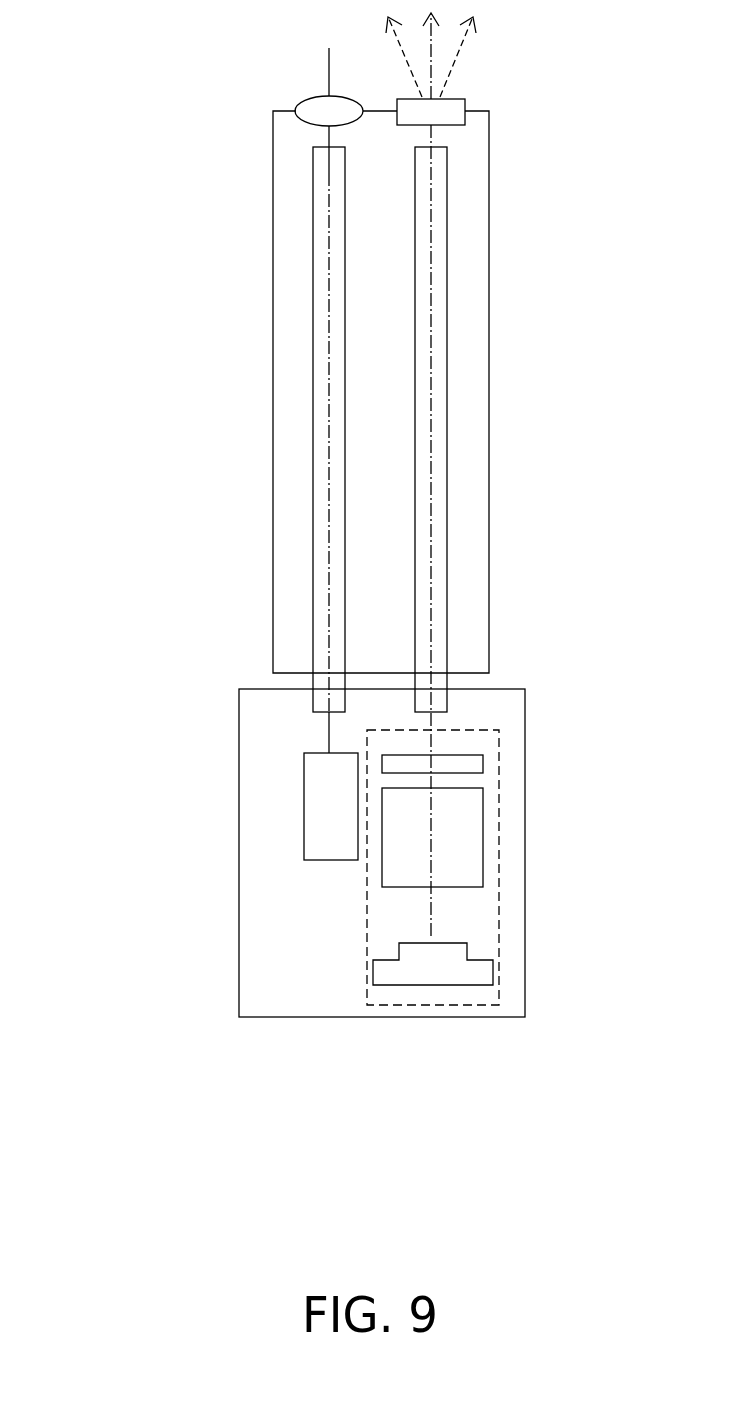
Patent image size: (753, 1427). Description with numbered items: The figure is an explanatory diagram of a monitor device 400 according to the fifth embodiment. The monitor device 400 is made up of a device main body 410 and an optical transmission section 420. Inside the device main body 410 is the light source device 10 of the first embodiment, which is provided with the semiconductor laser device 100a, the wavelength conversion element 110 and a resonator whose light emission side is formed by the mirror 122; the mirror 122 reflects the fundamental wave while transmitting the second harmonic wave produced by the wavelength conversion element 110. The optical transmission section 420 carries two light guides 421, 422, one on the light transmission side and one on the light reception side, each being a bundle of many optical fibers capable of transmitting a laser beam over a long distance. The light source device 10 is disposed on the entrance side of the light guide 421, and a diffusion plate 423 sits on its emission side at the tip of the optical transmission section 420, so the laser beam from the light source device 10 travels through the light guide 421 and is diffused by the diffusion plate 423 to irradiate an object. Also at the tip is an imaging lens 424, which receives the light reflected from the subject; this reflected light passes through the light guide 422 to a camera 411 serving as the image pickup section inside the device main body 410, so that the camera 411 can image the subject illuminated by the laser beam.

The monitor device 400 is at (99, 36).
The device main body 410 is at (525, 807).
The camera 411 is at (303, 795).
The optical transmission section 420 is at (489, 387).
The light guide 421 is at (447, 340).
The light guide 422 is at (312, 362).
The diffusion plate 423 is at (457, 99).
The imaging lens 424 is at (306, 99).
The light source device 10 is at (500, 773).
The mirror 122 is at (460, 752).
The wavelength conversion element 110 is at (483, 847).
The semiconductor laser device 100a is at (493, 967).